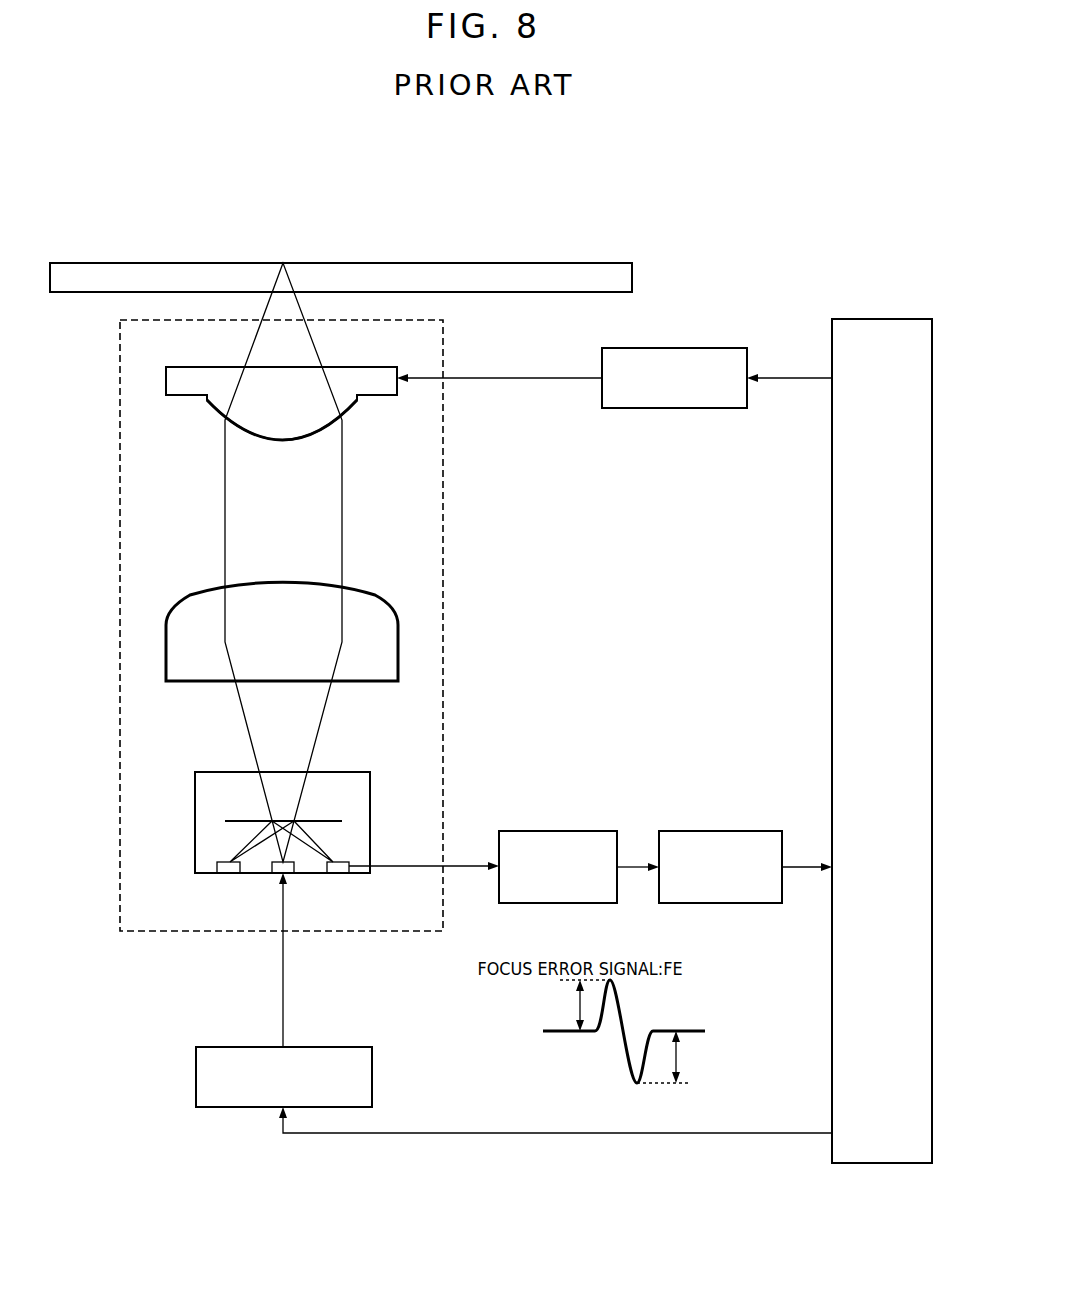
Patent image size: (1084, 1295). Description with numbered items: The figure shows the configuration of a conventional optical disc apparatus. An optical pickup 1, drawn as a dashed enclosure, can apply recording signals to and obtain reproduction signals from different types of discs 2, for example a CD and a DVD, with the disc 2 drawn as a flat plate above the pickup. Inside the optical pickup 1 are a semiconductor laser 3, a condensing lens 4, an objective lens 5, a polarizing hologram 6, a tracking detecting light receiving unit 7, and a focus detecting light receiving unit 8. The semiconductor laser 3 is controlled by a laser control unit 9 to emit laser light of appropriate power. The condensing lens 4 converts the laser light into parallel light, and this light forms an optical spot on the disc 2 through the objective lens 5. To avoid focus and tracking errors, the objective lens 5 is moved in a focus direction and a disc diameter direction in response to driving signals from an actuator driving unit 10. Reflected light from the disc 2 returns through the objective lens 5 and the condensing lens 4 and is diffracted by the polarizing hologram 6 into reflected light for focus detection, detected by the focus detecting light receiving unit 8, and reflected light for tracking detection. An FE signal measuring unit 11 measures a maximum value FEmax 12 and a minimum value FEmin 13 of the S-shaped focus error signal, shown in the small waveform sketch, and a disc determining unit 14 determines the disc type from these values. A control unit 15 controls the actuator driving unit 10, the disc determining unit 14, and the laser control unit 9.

The optical pickup 1 is at (443, 495).
The disc 2 is at (350, 263).
The semiconductor laser 3 is at (278, 873).
The condensing lens 4 is at (376, 620).
The objective lens 5 is at (342, 402).
The polarizing hologram 6 is at (330, 822).
The tracking detecting light receiving unit 7 is at (228, 873).
The focus detecting light receiving unit 8 is at (340, 873).
The laser control unit 9 is at (196, 1076).
The actuator driving unit 10 is at (672, 348).
The FE signal measuring unit 11 is at (558, 831).
The maximum value FEmax 12 is at (577, 1008).
The minimum value FEmin 13 is at (678, 1057).
The disc determining unit 14 is at (722, 831).
The control unit 15 is at (843, 660).